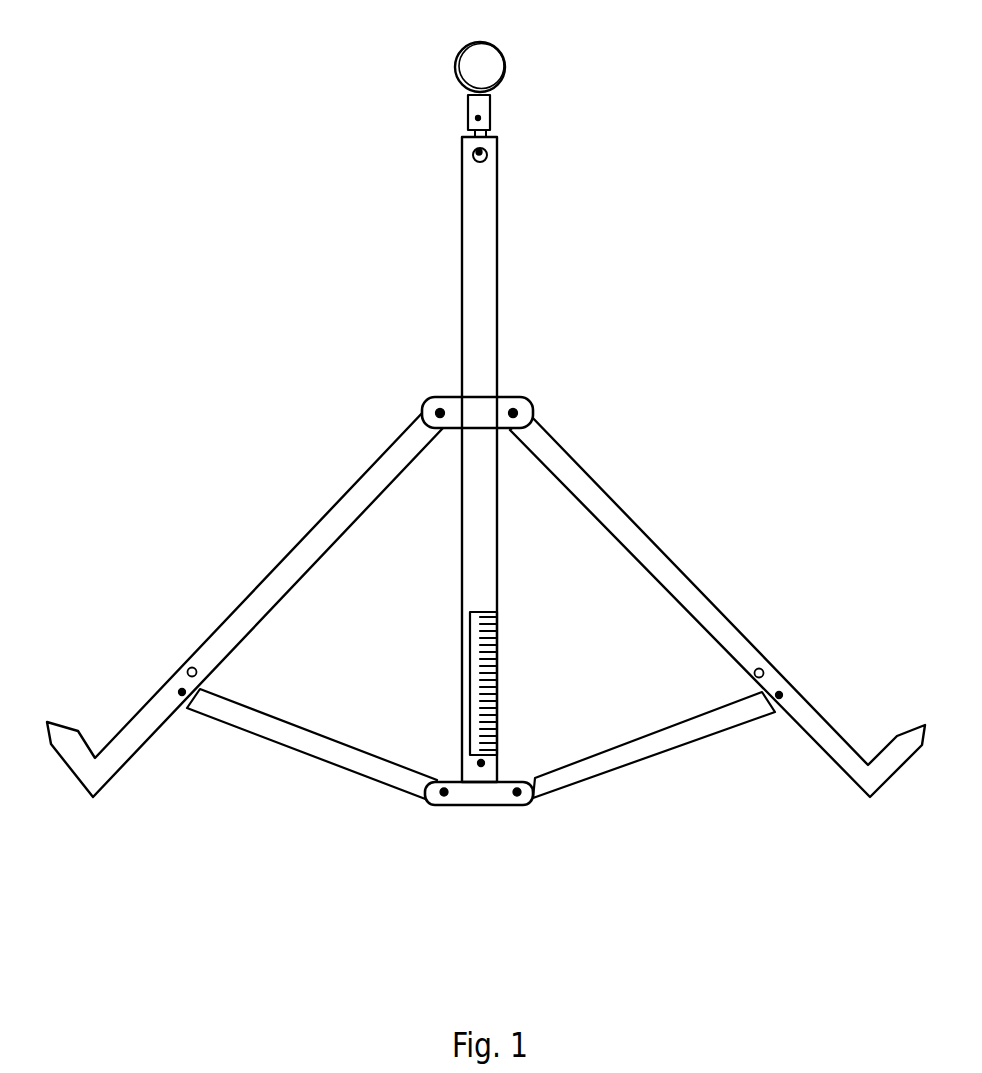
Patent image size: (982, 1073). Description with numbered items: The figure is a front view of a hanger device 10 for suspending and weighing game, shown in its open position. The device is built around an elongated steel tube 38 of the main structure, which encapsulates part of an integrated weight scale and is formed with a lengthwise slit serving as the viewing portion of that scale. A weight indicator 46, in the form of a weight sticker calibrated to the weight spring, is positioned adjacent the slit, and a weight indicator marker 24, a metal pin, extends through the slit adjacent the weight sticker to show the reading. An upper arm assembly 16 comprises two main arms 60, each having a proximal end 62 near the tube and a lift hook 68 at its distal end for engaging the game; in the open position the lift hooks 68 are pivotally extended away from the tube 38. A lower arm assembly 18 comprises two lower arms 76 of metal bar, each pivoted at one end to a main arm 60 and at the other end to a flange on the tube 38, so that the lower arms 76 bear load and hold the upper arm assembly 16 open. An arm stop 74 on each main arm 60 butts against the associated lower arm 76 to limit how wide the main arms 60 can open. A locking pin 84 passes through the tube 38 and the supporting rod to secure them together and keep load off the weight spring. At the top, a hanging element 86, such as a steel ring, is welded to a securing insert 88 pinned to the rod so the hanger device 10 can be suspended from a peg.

The hanger device 10 is at (698, 207).
The upper arm assembly 16 is at (580, 528).
The lower arm assembly 18 is at (363, 713).
The weight indicator marker 24 is at (498, 745).
The elongated tube 38 is at (468, 291).
The weight indicator 46 is at (475, 633).
The main arm 60 is at (486, 603).
The proximal end 62 is at (426, 422).
The lift hook 68 is at (62, 737).
The arm stop 74 is at (188, 669).
The lower arm 76 is at (338, 763).
The locking pin 84 is at (487, 152).
The hanging element 86 is at (517, 42).
The securing insert 88 is at (487, 108).